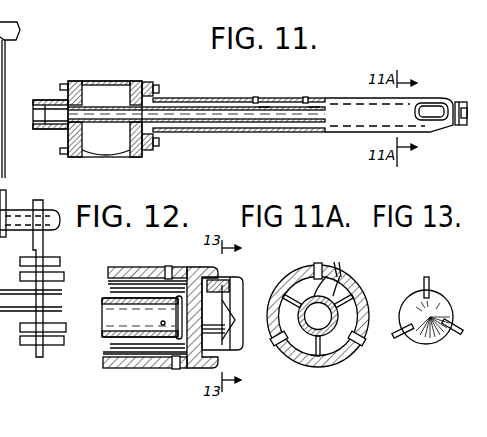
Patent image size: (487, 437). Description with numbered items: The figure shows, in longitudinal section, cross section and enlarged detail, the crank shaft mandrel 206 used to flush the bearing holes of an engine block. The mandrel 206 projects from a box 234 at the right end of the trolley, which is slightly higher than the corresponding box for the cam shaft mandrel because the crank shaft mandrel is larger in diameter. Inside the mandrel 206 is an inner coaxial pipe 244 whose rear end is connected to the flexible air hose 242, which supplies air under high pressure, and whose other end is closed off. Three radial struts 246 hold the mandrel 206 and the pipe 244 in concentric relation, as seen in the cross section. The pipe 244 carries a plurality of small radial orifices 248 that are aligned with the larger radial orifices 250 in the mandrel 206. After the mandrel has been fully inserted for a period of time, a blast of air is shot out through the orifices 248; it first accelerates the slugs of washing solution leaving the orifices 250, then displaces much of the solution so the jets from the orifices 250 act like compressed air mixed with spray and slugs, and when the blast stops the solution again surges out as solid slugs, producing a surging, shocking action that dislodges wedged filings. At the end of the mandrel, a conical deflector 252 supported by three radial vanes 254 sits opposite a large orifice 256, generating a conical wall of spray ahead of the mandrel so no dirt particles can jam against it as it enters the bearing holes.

In FIG. 11, the crank shaft mandrel 206 is at (210, 98).
In FIG. 12, the crank shaft mandrel 206 is at (112, 360).
In FIG. 11A, the crank shaft mandrel 206 is at (343, 292).
In FIG. 11, the box 234 is at (100, 81).
In FIG. 11, the flexible hose 242 is at (43, 100).
In FIG. 11, the inner coaxial pipe 244 is at (238, 122).
In FIG. 12, the inner coaxial pipe 244 is at (112, 298).
In FIG. 11A, the inner coaxial pipe 244 is at (300, 332).
In FIG. 11A, the radial struts 246 is at (334, 271).
In FIG. 11, the small radial orifices 248 is at (262, 107).
In FIG. 12, the small radial orifices 248 is at (163, 305).
In FIG. 11A, the small radial orifices 248 is at (322, 352).
In FIG. 11, the radial orifices 250 is at (255, 97).
In FIG. 12, the radial orifices 250 is at (168, 266).
In FIG. 11A, the radial orifices 250 is at (313, 266).
In FIG. 11, the conical deflector 252 is at (462, 128).
In FIG. 12, the conical deflector 252 is at (232, 336).
In FIG. 13, the conical deflector 252 is at (410, 338).
In FIG. 12, the radial vanes 254 is at (228, 284).
In FIG. 13, the radial vanes 254 is at (428, 283).
In FIG. 12, the large orifice 256 is at (210, 338).